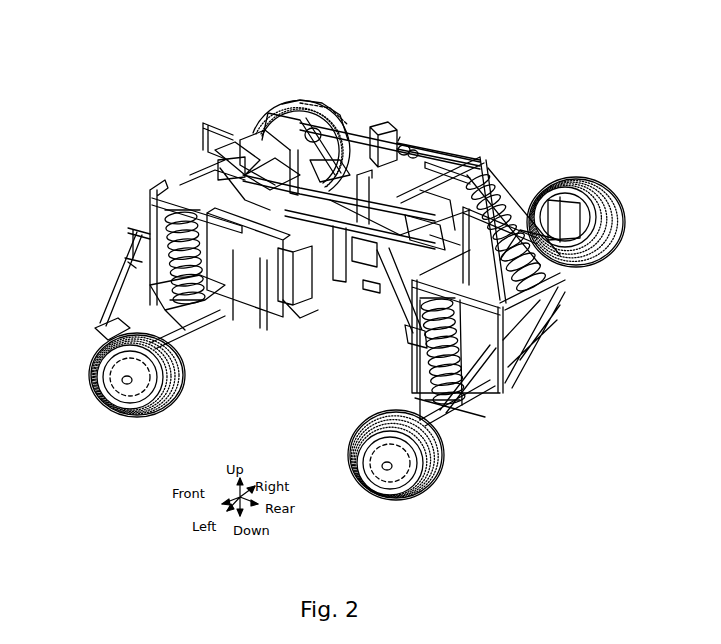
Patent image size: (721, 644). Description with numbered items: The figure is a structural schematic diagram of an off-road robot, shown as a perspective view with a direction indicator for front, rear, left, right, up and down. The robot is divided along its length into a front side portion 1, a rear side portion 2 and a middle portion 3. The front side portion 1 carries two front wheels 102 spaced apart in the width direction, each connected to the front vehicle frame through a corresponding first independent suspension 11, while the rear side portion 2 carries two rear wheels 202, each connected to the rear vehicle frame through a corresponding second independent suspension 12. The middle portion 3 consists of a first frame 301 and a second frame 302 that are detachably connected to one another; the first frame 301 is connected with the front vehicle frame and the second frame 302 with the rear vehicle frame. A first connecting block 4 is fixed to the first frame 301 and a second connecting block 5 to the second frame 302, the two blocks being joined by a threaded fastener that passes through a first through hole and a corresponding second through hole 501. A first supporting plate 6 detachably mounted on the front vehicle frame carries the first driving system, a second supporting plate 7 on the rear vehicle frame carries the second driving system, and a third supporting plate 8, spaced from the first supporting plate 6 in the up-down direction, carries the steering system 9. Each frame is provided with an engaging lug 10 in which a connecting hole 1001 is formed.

The front side portion 1 is at (328, 288).
The rear side portion 2 is at (607, 173).
The middle portion 3 is at (418, 63).
The first connecting block 4 is at (378, 126).
The second connecting block 5 is at (398, 138).
The first supporting plate 6 is at (262, 268).
The second supporting plate 7 is at (480, 393).
The third supporting plate 8 is at (228, 285).
The steering system 9 is at (138, 237).
The engaging lug 10 is at (416, 160).
The first independent suspension 11 is at (152, 287).
The second independent suspension 12 is at (448, 412).
The front wheel 102 is at (94, 369).
The rear wheel 202 is at (406, 503).
The first frame 301 is at (332, 102).
The second frame 302 is at (412, 153).
The second through hole 501 is at (406, 149).
The connecting hole 1001 is at (432, 166).